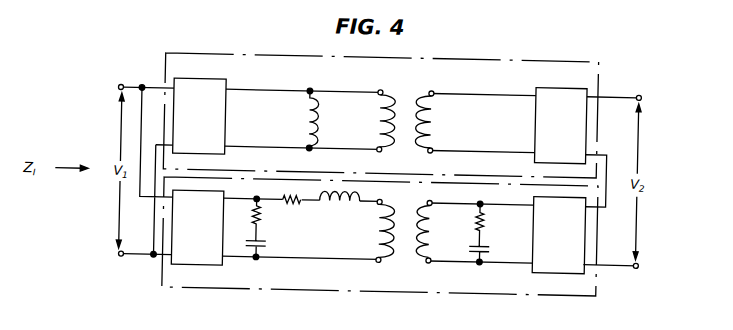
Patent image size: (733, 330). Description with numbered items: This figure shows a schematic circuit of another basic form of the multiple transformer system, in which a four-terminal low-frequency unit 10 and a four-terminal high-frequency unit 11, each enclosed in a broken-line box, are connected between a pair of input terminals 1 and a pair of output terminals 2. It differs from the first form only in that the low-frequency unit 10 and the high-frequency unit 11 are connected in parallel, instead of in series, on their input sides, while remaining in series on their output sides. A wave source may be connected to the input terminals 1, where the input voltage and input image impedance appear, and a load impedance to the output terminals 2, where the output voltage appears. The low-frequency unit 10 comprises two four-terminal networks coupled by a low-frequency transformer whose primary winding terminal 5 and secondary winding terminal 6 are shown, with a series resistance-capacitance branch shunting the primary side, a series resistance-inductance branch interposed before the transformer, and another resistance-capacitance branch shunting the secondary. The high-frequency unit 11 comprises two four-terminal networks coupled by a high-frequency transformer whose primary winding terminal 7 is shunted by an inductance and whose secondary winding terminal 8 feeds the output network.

The four-terminal low-frequency unit 10 is at (256, 280).
The four-terminal high-frequency unit 11 is at (261, 57).
The input terminal 1 is at (134, 170).
The output terminal 2 is at (622, 182).
The primary winding terminal 5 is at (377, 232).
The secondary winding terminal 6 is at (431, 232).
The primary winding terminal 7 is at (378, 121).
The secondary winding terminal 8 is at (430, 121).